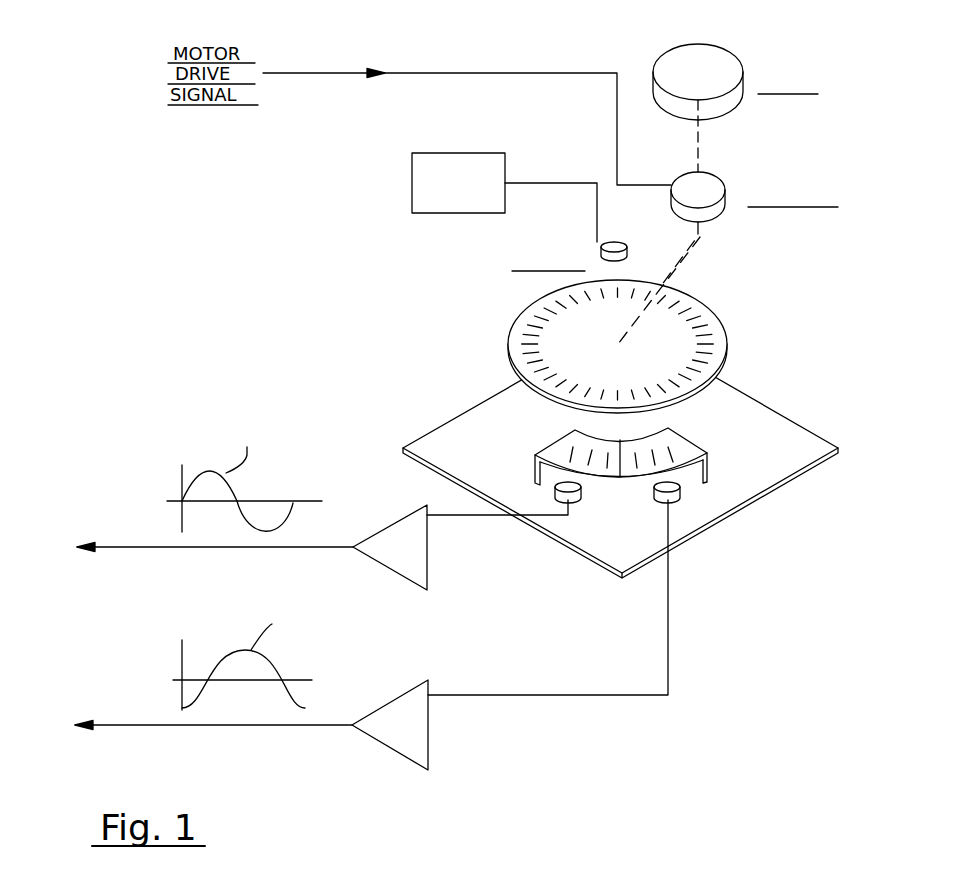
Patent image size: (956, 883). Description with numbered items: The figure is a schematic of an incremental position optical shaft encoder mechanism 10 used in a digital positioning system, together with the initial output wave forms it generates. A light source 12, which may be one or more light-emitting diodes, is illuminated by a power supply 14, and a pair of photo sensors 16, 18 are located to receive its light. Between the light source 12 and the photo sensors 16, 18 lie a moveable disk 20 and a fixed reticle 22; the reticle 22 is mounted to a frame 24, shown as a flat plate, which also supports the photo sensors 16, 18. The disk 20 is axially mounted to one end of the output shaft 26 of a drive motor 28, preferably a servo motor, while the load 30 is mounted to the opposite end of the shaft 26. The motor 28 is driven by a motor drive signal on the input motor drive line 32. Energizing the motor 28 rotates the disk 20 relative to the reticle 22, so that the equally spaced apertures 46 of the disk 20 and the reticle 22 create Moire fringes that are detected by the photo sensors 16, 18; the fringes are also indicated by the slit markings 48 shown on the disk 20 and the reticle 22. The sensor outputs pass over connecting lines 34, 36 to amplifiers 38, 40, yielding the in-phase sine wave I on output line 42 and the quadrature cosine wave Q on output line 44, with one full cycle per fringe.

The optical shaft encoder mechanism 10 is at (486, 380).
The light source 12 is at (613, 241).
The power supply 14 is at (490, 153).
The photo sensor 16 is at (572, 497).
The photo sensor 18 is at (670, 498).
The moveable disk 20 is at (728, 355).
The fixed reticle 22 is at (684, 433).
The frame 24 is at (800, 440).
The output shaft 26 is at (693, 245).
The drive motor 28 is at (713, 182).
The load 30 is at (708, 63).
The input motor drive line 32 is at (468, 72).
The first detector output line 34 is at (472, 517).
The second detector output line 36 is at (520, 693).
The amplifier 38 is at (413, 520).
The amplifier 40 is at (397, 743).
The output line 42 is at (145, 547).
The output line 44 is at (150, 725).
The apertures 46 is at (532, 335).
The slits 48 is at (710, 339).